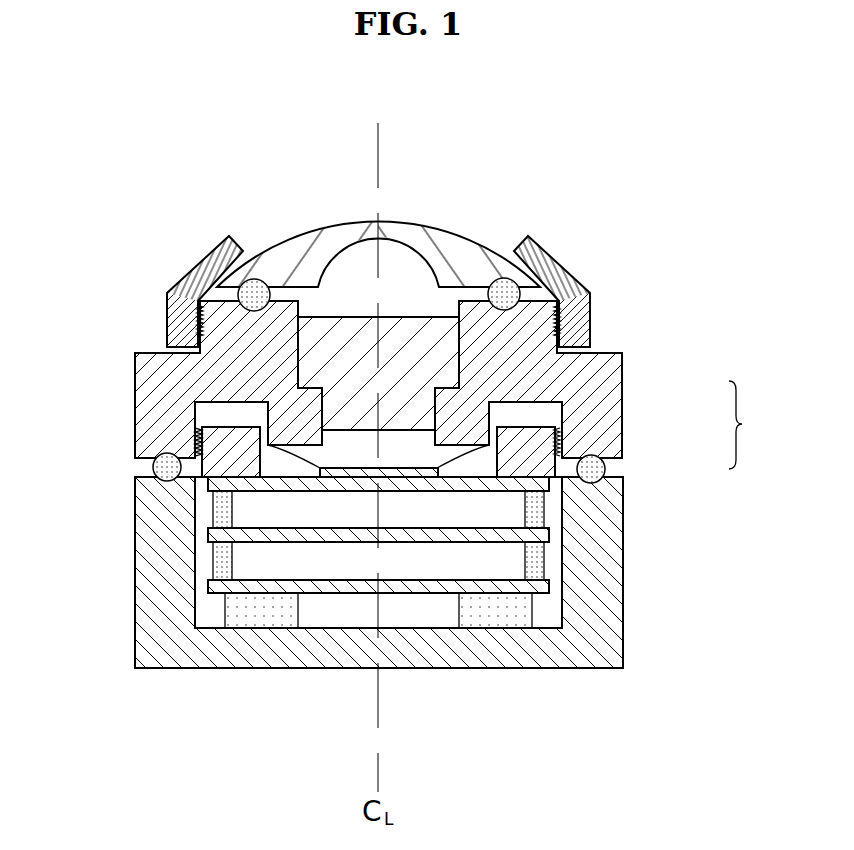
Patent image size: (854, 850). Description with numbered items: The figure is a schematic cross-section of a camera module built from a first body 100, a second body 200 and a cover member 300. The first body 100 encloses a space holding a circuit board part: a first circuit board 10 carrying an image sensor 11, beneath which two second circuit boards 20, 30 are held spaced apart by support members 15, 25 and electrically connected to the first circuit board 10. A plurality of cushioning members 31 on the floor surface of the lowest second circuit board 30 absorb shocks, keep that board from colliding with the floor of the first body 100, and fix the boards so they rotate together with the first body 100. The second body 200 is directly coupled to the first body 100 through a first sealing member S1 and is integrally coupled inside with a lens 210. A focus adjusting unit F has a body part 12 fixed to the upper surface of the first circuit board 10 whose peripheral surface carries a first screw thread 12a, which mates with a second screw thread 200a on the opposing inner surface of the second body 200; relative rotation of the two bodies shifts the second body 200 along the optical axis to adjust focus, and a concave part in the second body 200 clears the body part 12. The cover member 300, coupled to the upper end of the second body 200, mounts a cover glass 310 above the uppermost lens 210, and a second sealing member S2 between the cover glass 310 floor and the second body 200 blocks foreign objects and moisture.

The first body 100 is at (612, 677).
The first circuit board 10 is at (208, 484).
The image sensor 11 is at (200, 441).
The body part 12 is at (597, 464).
The first screw thread 12a is at (561, 443).
The support member 15 is at (542, 507).
The second circuit board 20 is at (208, 533).
The support member 25 is at (538, 558).
The second circuit board 30 is at (208, 587).
The cushioning member 31 is at (257, 613).
The second body 200 is at (621, 386).
The second screw thread 200a is at (561, 435).
The lens 210 is at (410, 330).
The cover member 300 is at (591, 293).
The cover glass 310 is at (418, 240).
The first sealing member S1 is at (163, 467).
The second sealing member S2 is at (509, 289).
The focus adjusting unit F is at (745, 425).